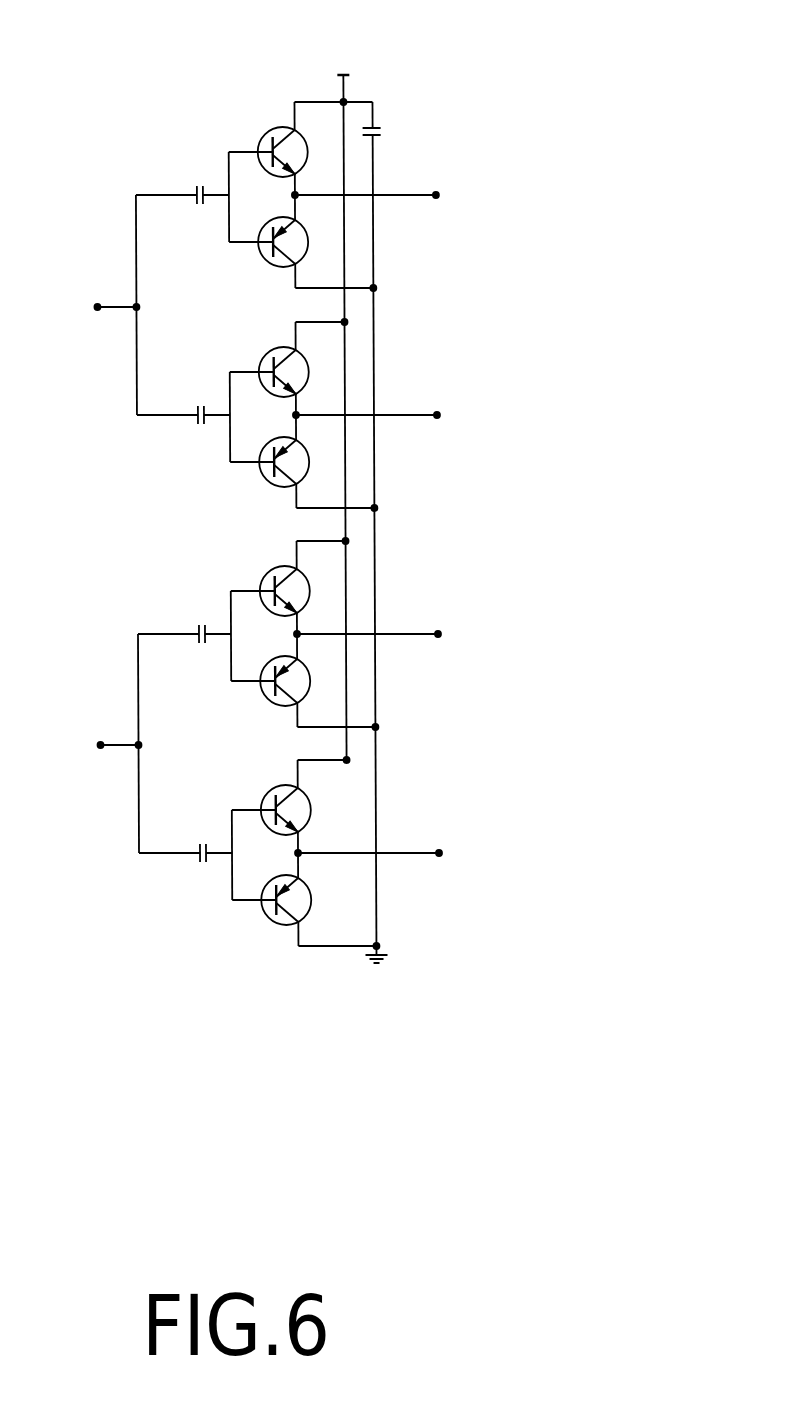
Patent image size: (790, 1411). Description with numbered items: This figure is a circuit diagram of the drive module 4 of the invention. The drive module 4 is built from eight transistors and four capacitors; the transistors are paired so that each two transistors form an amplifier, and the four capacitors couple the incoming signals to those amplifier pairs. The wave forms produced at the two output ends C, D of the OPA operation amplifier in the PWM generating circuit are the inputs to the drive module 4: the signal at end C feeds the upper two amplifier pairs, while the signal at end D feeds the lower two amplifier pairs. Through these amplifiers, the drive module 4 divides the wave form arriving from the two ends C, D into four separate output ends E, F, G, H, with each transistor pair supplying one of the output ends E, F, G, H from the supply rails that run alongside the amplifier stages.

The drive module 4 is at (415, 108).
The output end C of the OPA operation amplifier C is at (93, 302).
The output end D of the OPA operation amplifier D is at (94, 747).
The output end E is at (431, 190).
The output end F is at (431, 410).
The output end G is at (434, 629).
The output end H is at (435, 848).